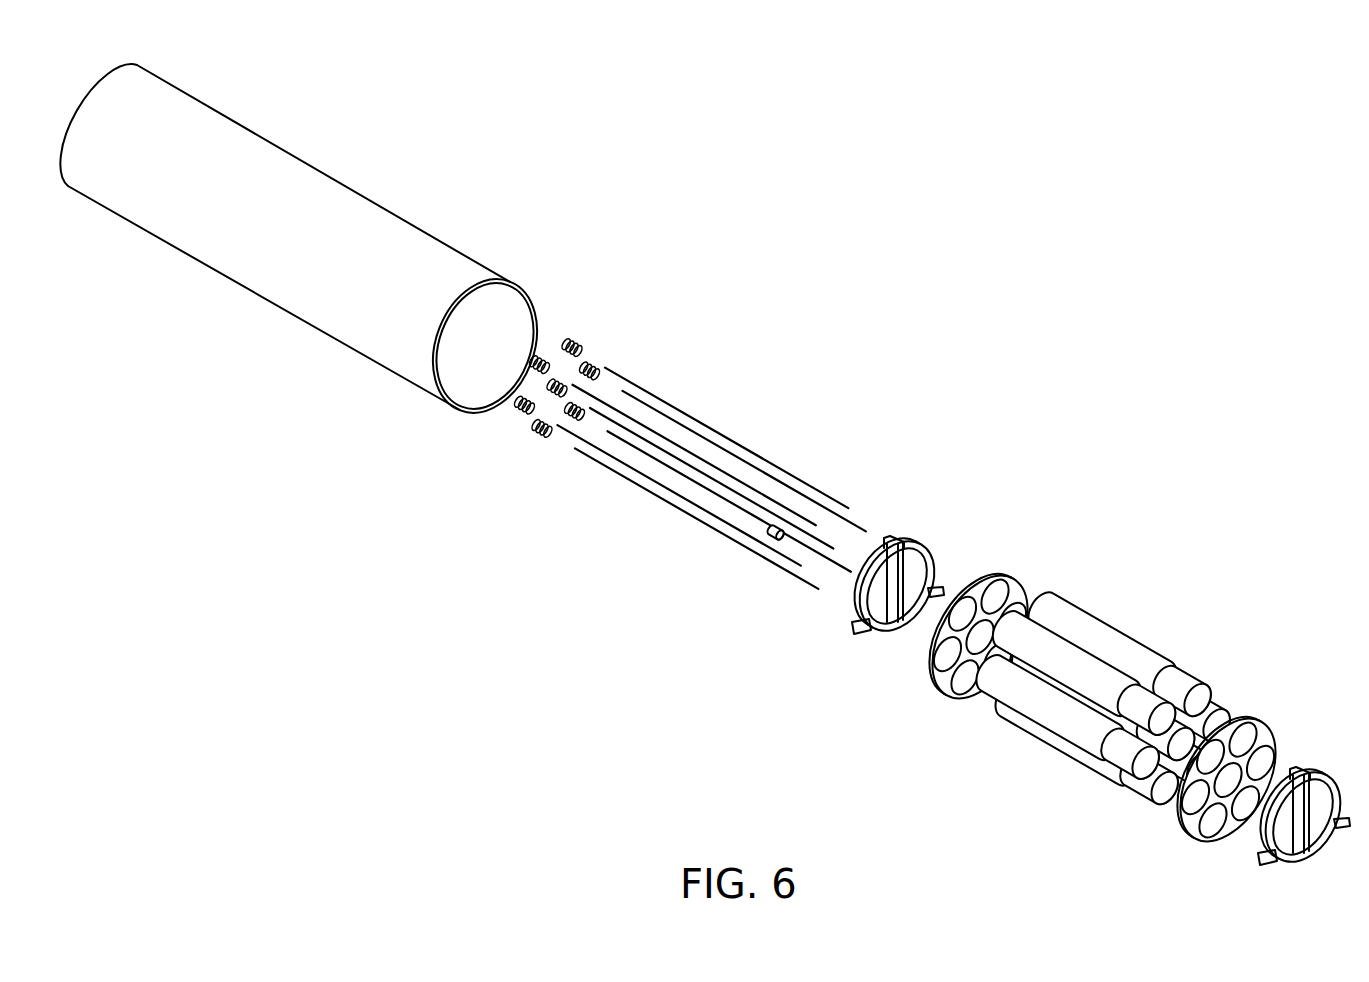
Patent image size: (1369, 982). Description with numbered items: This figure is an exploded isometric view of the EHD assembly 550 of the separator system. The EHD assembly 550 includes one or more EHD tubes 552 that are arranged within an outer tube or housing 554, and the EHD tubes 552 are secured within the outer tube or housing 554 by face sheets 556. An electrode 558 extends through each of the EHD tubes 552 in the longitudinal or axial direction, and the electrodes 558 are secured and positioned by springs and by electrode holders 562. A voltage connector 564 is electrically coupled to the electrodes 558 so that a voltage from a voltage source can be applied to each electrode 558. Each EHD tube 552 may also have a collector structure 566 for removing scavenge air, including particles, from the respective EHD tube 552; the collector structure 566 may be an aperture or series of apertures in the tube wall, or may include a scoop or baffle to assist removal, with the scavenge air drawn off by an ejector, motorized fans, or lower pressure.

The EHD assembly 550 is at (678, 162).
The EHD tube 552 is at (1107, 692).
The outer tube or housing 554 is at (340, 146).
The face sheet 556 is at (1000, 574).
The electrode 558 is at (762, 438).
The electrode holder 562 is at (903, 540).
The voltage connector 564 is at (773, 537).
The collector structure 566 is at (1172, 676).